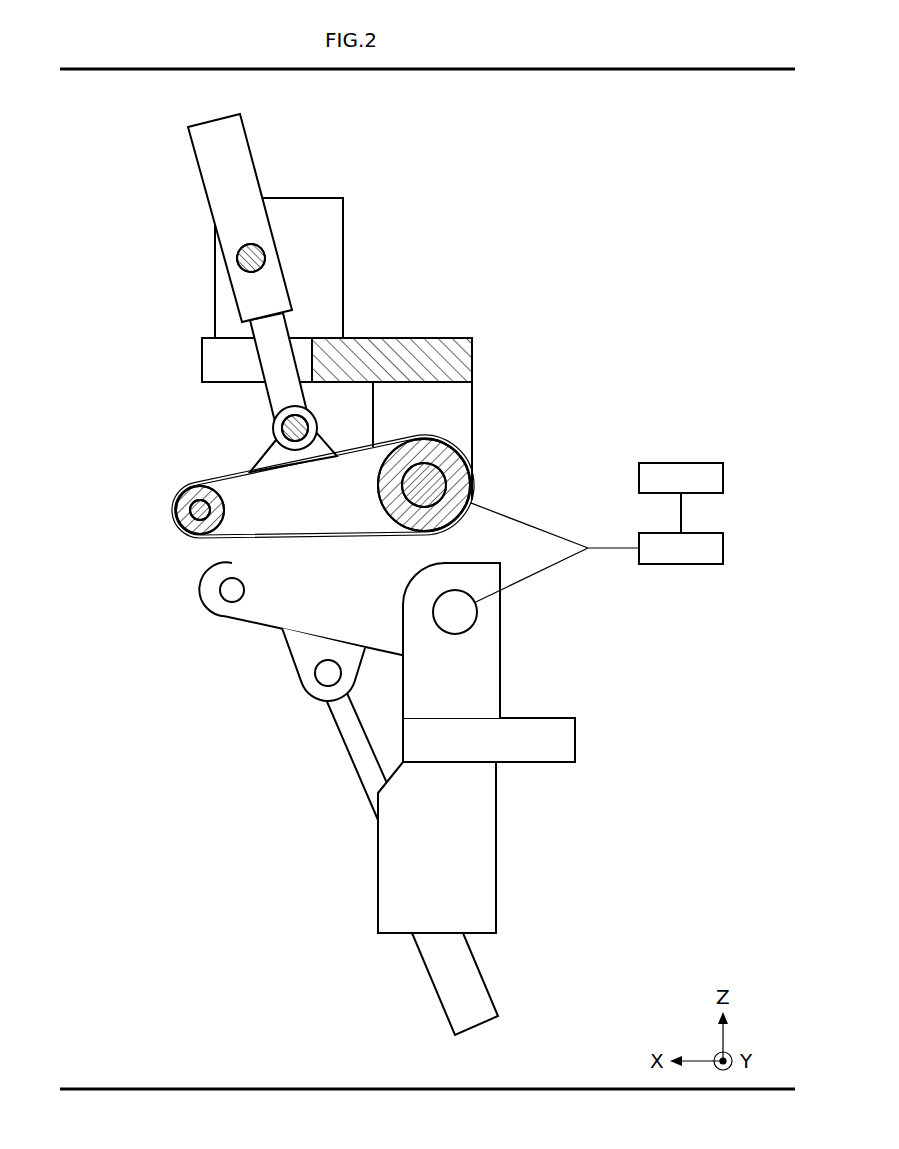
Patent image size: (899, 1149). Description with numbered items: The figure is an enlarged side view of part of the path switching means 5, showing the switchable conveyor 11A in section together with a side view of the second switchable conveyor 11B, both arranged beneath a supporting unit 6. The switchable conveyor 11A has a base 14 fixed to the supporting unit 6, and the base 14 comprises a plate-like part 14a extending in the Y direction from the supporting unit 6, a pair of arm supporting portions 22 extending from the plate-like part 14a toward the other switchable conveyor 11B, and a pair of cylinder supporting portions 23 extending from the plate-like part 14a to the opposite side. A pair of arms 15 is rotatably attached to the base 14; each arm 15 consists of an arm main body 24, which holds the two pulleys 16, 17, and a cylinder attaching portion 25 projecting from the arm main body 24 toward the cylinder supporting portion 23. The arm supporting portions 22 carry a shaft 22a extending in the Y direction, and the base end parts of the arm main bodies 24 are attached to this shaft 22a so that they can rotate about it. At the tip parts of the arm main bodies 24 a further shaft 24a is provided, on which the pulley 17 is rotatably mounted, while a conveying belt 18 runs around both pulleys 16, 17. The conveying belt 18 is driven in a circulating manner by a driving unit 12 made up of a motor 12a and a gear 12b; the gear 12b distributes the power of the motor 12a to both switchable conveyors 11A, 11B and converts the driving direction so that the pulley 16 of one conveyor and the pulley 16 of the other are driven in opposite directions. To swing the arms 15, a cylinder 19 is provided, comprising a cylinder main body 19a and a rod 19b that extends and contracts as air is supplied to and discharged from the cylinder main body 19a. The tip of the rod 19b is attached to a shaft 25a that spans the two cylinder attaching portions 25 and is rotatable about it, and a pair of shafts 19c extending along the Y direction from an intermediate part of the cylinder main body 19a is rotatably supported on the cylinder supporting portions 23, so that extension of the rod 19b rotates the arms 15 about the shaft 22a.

The path switching means 5 is at (576, 182).
The supporting unit 6 is at (527, 69).
The switchable conveyor 11A is at (163, 403).
The switchable conveyor 11B is at (264, 784).
The driving unit 12 is at (669, 435).
The motor 12a is at (703, 463).
The gear 12b is at (700, 533).
The base 14 is at (433, 551).
The plate-like part 14a is at (438, 343).
The arm 15 is at (150, 418).
The pulley 16 is at (378, 480).
The pulley 17 is at (222, 504).
The conveying belt 18 is at (387, 445).
The cylinder 19 is at (270, 109).
The cylinder main body 19a is at (255, 150).
The rod 19b is at (275, 327).
The shaft 19c is at (250, 258).
The arm supporting portion 22 is at (460, 404).
The shaft 22a is at (430, 466).
The cylinder supporting portion 23 is at (335, 238).
The arm main body 24 is at (218, 474).
The shaft 24a is at (195, 511).
The cylinder attaching portion 25 is at (266, 448).
The shaft 25a is at (306, 423).